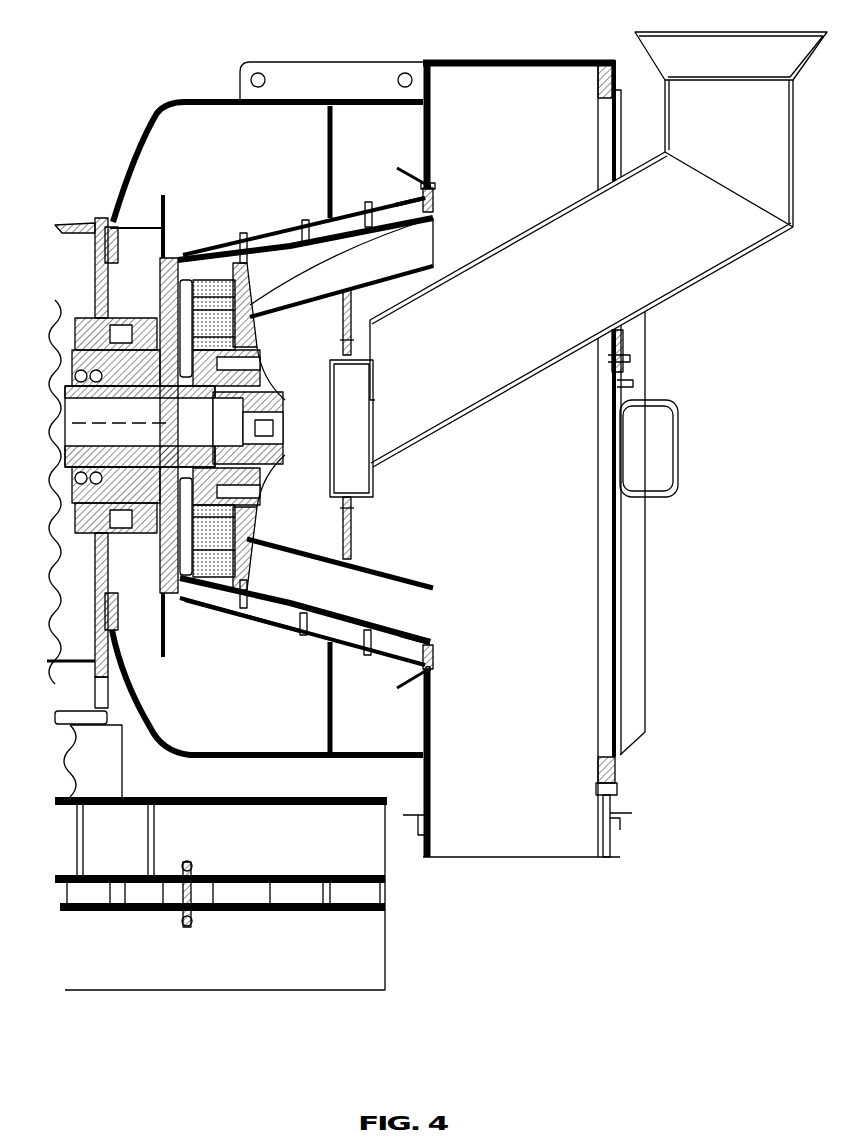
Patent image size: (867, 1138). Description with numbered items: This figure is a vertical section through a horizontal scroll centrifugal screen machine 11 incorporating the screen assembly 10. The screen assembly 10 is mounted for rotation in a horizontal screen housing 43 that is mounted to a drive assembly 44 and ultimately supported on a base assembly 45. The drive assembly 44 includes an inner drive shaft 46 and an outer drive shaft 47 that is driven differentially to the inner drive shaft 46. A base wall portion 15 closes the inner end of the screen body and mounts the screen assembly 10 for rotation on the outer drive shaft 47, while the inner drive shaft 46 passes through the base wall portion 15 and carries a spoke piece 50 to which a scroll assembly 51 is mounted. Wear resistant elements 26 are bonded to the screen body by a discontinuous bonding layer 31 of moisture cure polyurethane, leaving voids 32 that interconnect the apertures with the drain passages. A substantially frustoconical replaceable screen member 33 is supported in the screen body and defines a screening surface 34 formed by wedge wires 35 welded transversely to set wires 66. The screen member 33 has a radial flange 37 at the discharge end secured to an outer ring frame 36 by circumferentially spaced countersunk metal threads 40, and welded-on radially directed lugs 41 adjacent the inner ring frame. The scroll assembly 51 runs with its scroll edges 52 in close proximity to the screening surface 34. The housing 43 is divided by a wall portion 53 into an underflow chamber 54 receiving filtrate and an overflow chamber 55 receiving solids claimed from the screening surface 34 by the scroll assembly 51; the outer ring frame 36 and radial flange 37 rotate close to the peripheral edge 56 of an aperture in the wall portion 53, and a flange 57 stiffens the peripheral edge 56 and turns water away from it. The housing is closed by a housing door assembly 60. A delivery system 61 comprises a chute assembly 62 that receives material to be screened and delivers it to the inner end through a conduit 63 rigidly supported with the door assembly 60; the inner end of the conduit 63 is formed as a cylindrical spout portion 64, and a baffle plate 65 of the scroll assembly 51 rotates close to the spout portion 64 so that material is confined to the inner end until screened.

The screen assembly 10 is at (265, 625).
The horizontal scroll centrifugal screen machine 11 is at (676, 612).
The base wall portion 15 is at (168, 318).
The wear resistant elements 26 is at (245, 350).
The discontinuous bonding layer 31 is at (205, 588).
The voids 32 is at (203, 265).
The replaceable screen member 33 is at (305, 240).
The screening surface 34 is at (390, 615).
The wedge wires 35 is at (425, 637).
The outer ring frame 36 is at (420, 208).
The radial flange 37 is at (433, 182).
The countersunk metal threads 40 is at (433, 200).
The radially directed lugs 41 is at (252, 245).
The horizontal screen housing 43 is at (183, 92).
The drive assembly 44 is at (46, 335).
The base assembly 45 is at (387, 893).
The inner drive shaft 46 is at (90, 440).
The outer drive shaft 47 is at (82, 395).
The spoke piece 50 is at (250, 322).
The scroll assembly 51 is at (373, 263).
The scroll edges 52 is at (292, 280).
The wall portion 53 is at (450, 712).
The underflow chamber 54 is at (318, 720).
The overflow chamber 55 is at (570, 818).
The peripheral edge 56 is at (430, 183).
The flange 57 is at (397, 168).
The housing door assembly 60 is at (638, 543).
The delivery system 61 is at (725, 282).
The chute assembly 62 is at (765, 153).
The conduit 63 is at (755, 222).
The cylindrical spout portion 64 is at (357, 478).
The baffle plate 65 is at (352, 530).
The set wires 66 is at (340, 620).